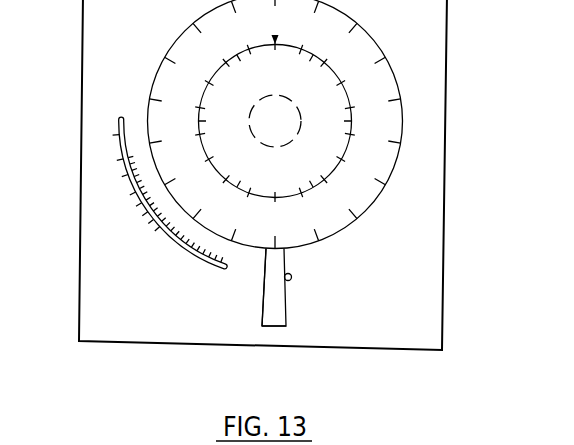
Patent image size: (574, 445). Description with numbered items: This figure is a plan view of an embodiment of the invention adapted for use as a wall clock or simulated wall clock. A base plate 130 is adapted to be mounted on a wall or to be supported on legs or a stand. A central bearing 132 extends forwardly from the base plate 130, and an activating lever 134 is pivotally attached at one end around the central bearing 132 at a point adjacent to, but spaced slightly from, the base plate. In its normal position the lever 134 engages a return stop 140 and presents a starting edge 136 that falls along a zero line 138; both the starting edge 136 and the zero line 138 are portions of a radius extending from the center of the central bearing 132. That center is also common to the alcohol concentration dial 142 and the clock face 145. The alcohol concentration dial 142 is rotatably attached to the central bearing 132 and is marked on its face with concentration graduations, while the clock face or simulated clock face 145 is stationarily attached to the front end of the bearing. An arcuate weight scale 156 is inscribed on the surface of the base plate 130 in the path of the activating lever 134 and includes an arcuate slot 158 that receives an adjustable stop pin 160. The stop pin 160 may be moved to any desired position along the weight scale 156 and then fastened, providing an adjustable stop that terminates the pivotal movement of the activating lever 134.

The base plate 130 is at (405, 302).
The central bearing 132 is at (288, 115).
The activating lever 134 is at (277, 307).
The starting edge 136 is at (262, 298).
The zero line 138 is at (258, 330).
The return stop 140 is at (290, 280).
The alcohol concentration dial 142 is at (398, 84).
The clock face 145 is at (262, 168).
The arcuate weight scale 156 is at (117, 223).
The arcuate slot 158 is at (124, 214).
The adjustable stop pin 160 is at (128, 210).